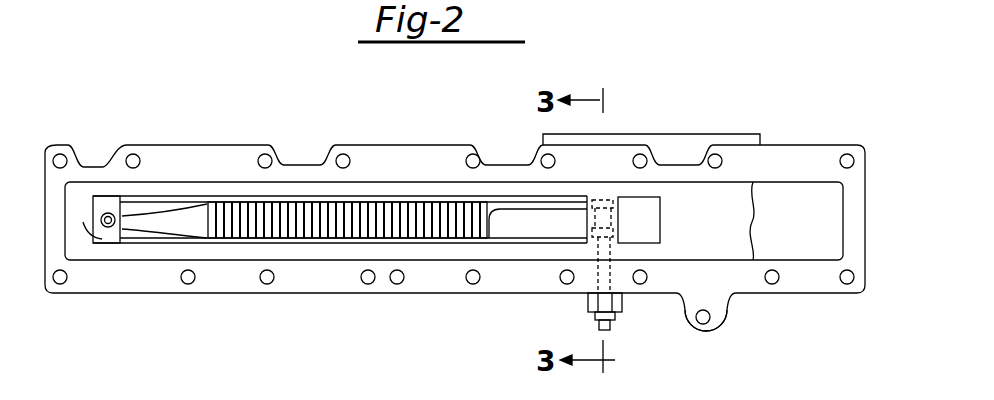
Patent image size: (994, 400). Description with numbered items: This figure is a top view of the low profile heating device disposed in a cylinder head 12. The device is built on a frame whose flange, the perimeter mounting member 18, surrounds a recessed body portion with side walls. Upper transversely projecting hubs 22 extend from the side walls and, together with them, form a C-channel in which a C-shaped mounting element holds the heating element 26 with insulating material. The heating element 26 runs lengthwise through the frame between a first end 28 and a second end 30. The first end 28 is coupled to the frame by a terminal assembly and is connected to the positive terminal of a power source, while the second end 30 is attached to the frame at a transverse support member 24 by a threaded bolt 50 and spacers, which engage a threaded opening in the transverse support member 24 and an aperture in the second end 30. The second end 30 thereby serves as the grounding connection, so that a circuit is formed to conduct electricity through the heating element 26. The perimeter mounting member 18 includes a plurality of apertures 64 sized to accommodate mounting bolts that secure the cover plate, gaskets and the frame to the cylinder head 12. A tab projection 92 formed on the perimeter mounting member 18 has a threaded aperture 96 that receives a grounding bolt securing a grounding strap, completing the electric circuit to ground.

The cylinder head 12 is at (684, 153).
The perimeter mounting member 18 is at (805, 165).
The upper transversely projecting hub 22 is at (112, 188).
The transverse support member 24 is at (83, 222).
The heating element 26 is at (243, 228).
The first end 28 is at (578, 219).
The second end 30 is at (124, 236).
The threaded bolt 50 is at (108, 213).
The apertures 64 is at (265, 153).
The tab projection 92 is at (724, 326).
The threaded aperture 96 is at (697, 323).